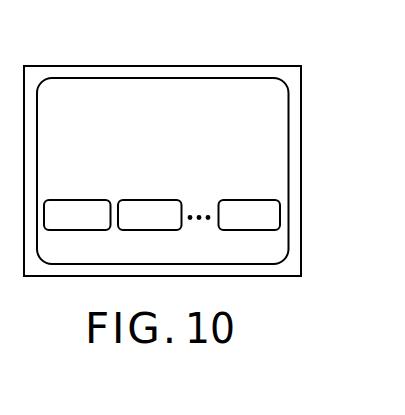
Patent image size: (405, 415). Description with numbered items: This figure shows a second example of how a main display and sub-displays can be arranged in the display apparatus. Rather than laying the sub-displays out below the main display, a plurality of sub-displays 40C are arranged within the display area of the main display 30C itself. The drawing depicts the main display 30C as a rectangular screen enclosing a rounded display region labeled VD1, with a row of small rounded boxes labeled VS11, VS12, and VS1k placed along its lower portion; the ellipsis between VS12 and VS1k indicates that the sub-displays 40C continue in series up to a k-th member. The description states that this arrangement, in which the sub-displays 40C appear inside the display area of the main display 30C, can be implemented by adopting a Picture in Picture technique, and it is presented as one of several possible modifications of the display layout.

The main display 30C is at (163, 142).
The sub-displays 40C is at (302, 212).
The video data VD1 is at (163, 139).
The video segment VS11 is at (77, 216).
The video segment VS12 is at (150, 216).
The video segment VS1k is at (250, 216).